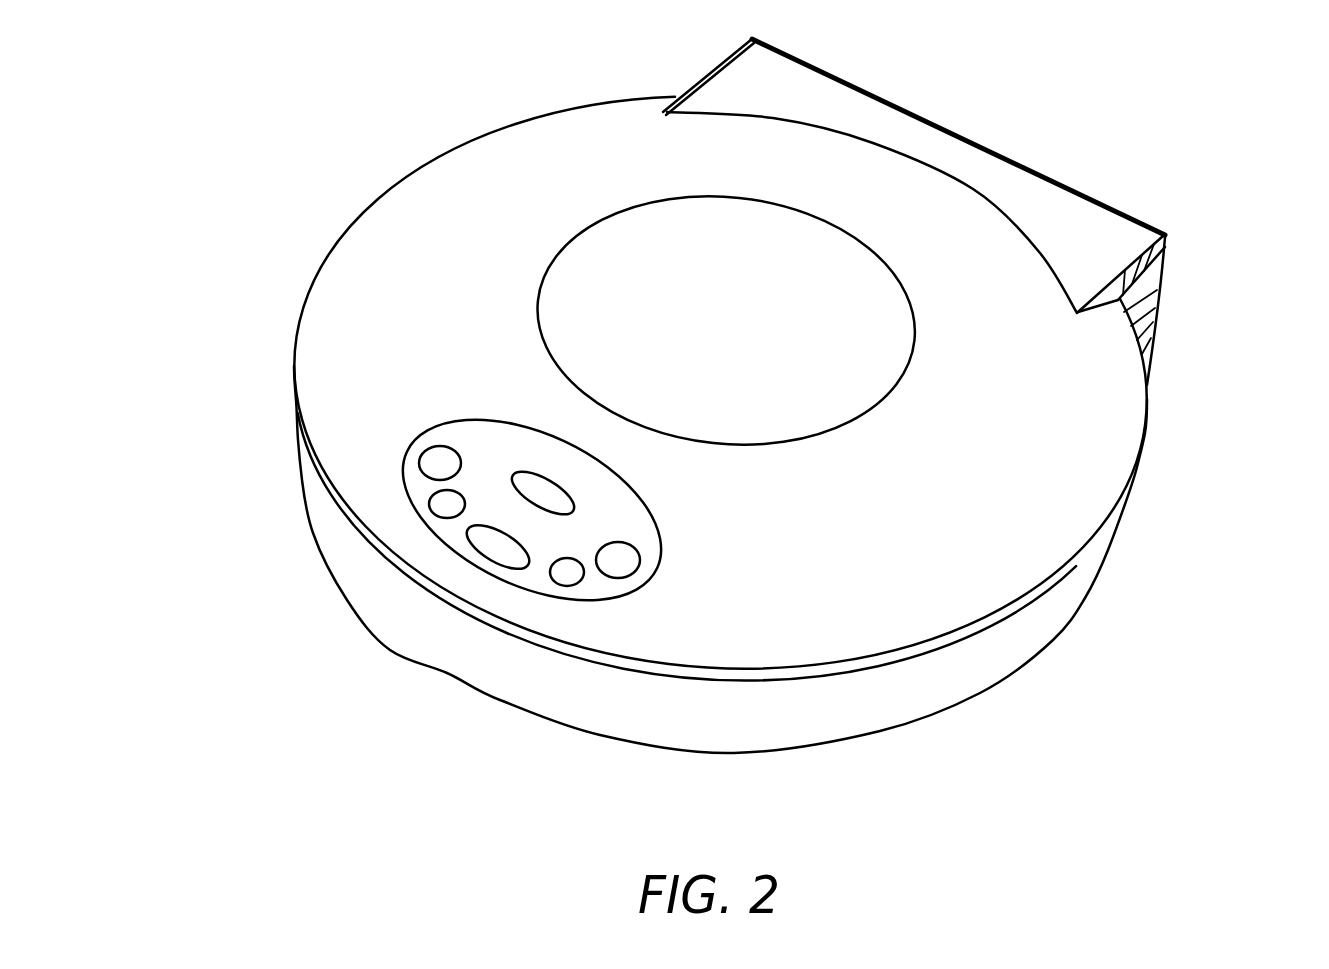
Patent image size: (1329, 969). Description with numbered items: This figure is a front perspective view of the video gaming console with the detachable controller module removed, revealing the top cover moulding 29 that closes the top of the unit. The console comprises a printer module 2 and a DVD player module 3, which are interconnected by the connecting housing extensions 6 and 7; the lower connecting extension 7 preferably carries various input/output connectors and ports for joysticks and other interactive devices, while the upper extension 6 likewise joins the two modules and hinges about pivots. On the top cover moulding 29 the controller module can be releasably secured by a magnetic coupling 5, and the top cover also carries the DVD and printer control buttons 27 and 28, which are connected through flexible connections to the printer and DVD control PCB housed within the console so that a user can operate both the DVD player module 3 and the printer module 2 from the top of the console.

The printer module 2 is at (1077, 475).
The DVD player module 3 is at (880, 690).
The magnetic coupling 5 is at (610, 253).
The connecting housing extension 6 is at (1160, 287).
The lower connecting extension 7 is at (1157, 340).
The DVD control button 27 is at (533, 572).
The printer control button 28 is at (423, 532).
The top cover moulding 29 is at (365, 290).